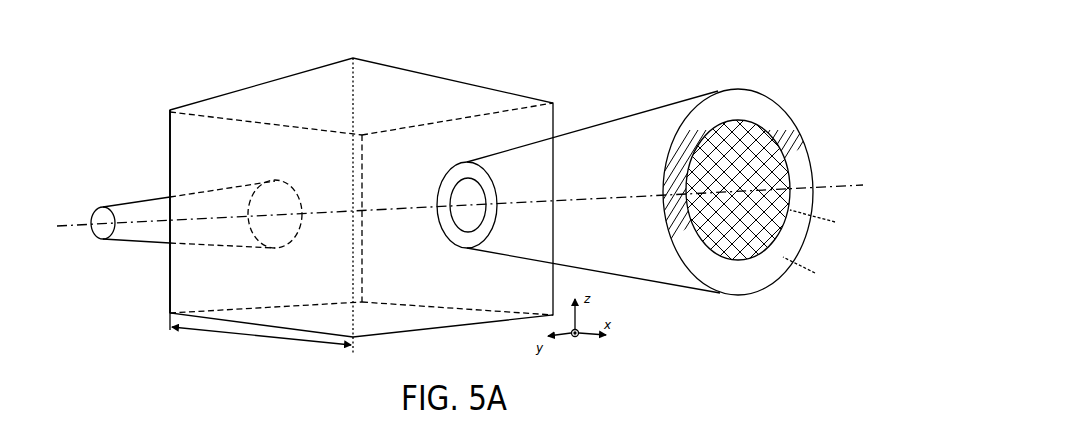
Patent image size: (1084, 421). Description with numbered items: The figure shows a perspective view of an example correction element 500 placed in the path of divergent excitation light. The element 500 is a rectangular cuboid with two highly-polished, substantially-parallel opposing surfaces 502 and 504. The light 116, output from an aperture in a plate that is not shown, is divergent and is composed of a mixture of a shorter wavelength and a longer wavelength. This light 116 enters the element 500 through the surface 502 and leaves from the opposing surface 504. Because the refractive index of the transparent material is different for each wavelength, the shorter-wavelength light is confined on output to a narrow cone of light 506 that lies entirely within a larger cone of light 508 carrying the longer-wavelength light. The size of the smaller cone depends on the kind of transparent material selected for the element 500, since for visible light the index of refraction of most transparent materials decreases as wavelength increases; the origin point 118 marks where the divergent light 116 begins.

The correction element 500 is at (452, 80).
The surface 502 is at (177, 138).
The opposing surface 504 is at (543, 125).
The narrow cone of light 506 is at (792, 123).
The larger cone of light 508 is at (706, 104).
The light 116 is at (140, 243).
The light source point 118 is at (82, 224).